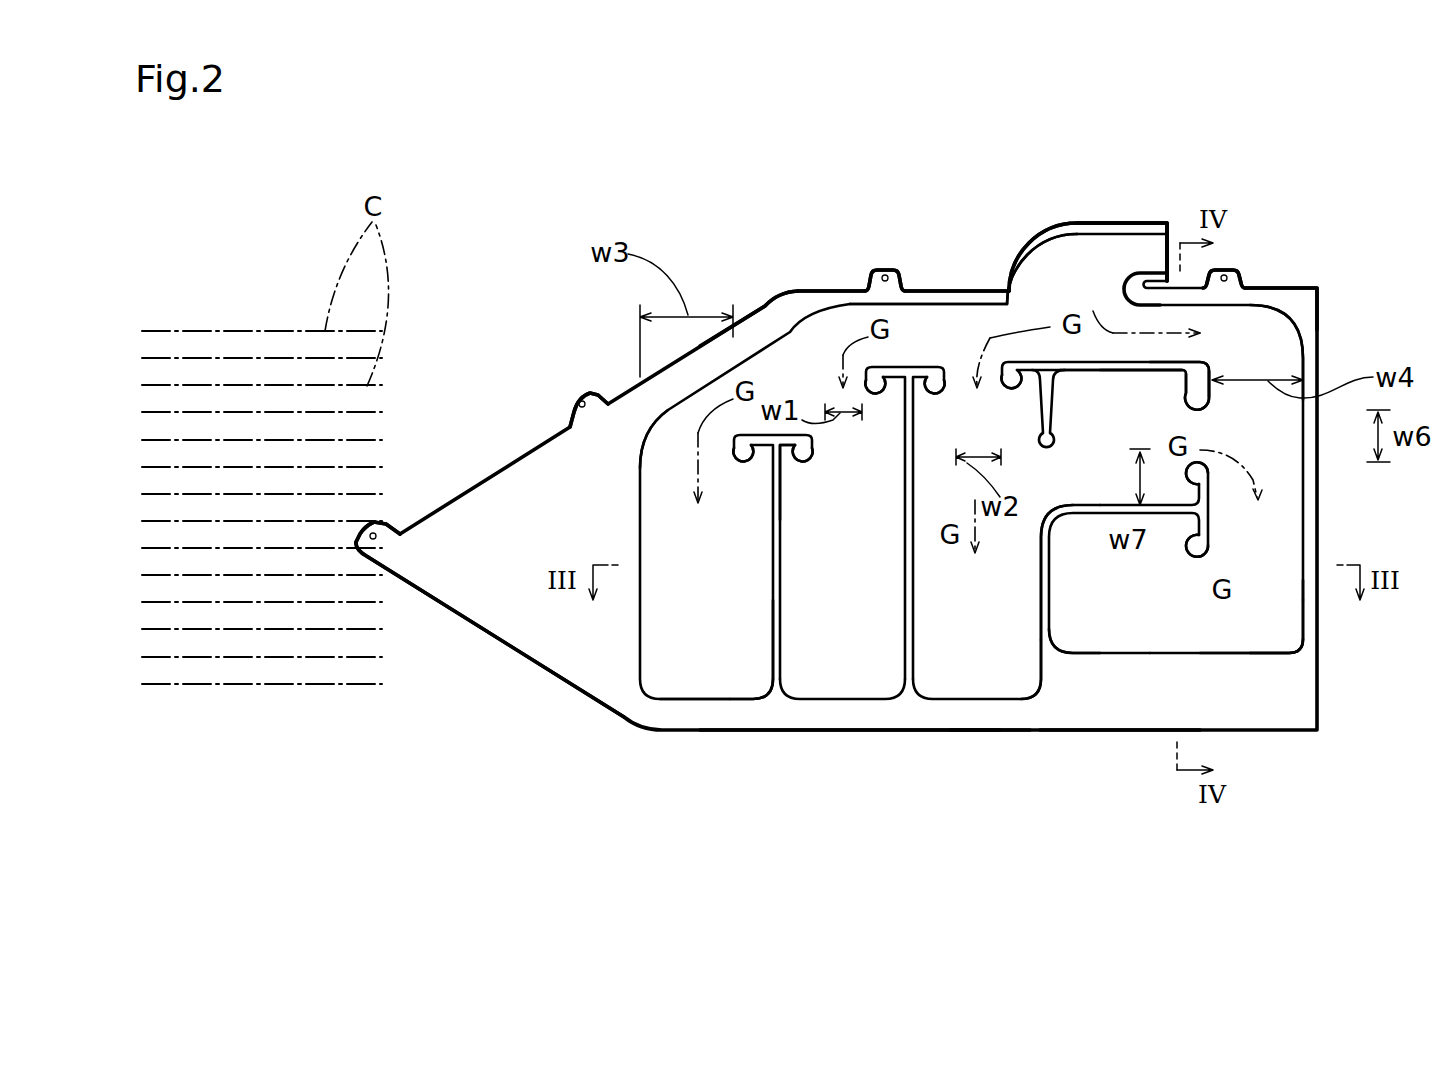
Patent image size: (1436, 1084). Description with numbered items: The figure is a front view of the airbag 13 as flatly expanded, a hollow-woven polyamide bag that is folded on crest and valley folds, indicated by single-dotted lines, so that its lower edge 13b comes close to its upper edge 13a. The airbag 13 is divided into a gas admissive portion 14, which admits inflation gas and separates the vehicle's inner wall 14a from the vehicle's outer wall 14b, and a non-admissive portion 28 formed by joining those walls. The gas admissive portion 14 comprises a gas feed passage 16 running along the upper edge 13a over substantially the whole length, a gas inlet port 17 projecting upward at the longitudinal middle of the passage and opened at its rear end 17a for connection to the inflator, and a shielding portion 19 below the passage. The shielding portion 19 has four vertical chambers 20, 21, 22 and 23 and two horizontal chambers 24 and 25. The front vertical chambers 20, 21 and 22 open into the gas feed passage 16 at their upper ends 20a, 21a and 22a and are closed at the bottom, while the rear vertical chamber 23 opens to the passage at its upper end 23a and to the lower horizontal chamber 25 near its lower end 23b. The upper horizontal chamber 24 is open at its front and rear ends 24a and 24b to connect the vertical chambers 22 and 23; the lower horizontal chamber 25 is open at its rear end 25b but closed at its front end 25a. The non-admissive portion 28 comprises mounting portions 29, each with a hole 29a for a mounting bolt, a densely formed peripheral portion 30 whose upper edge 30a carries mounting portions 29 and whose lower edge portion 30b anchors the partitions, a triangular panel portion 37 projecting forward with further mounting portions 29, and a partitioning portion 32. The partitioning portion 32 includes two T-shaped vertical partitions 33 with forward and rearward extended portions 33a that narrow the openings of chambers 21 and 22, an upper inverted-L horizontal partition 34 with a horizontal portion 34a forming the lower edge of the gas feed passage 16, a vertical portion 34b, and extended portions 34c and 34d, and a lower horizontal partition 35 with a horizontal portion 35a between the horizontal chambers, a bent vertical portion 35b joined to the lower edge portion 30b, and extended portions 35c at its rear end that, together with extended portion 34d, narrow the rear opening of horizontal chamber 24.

The airbag 13 is at (1336, 272).
The upper edge of the airbag 13a is at (783, 291).
The lower edge of the airbag 13b is at (860, 720).
The gas admissive portion 14 is at (1063, 472).
The vehicle's inner wall 14a is at (735, 683).
The vehicle's outer wall 14b is at (707, 683).
The gas feed passage 16 is at (990, 330).
The gas inlet port 17 is at (1113, 243).
The rear end of the gas inlet port 17a is at (1153, 250).
The shielding portion 19 is at (994, 716).
The vertical chamber 20 is at (650, 607).
The upper end of vertical chamber 20a is at (655, 465).
The vertical chamber 21 is at (825, 673).
The upper end of vertical chamber 21a is at (840, 445).
The vertical chamber 22 is at (945, 683).
The upper end of vertical chamber 22a is at (967, 377).
The vertical chamber 23 is at (1283, 483).
The upper end of vertical chamber 23a is at (1267, 367).
The lower end of vertical chamber 23b is at (1203, 600).
The horizontal chamber 24 is at (1127, 438).
The front end of horizontal chamber 24a is at (1050, 494).
The rear end of horizontal chamber 24b is at (1212, 441).
The horizontal chamber 25 is at (1141, 647).
The front end of horizontal chamber 25a is at (1057, 613).
The rear end of horizontal chamber 25b is at (1300, 656).
The non-admissive portion 28 is at (798, 453).
The mounting portion 29 is at (387, 520).
The hole 29a is at (582, 412).
The peripheral portion 30 is at (830, 300).
The upper edge of the peripheral portion 30a is at (1285, 291).
The lower edge portion of the peripheral portion 30b is at (1097, 713).
The partitioning portion 32 is at (1073, 491).
The vertical partition 33 is at (905, 582).
The extended portion 33a is at (940, 470).
The horizontal partition 34 is at (1093, 383).
The horizontal portion 34a is at (1150, 362).
The vertical portion 34b is at (1017, 308).
The extended portion 34c is at (1008, 388).
The extended portion 34d is at (1210, 380).
The horizontal partition 35 is at (1190, 603).
The horizontal portion 35a is at (1170, 517).
The vertical portion 35b is at (1037, 608).
The extended portion 35c is at (1193, 557).
The panel portion 37 is at (498, 622).